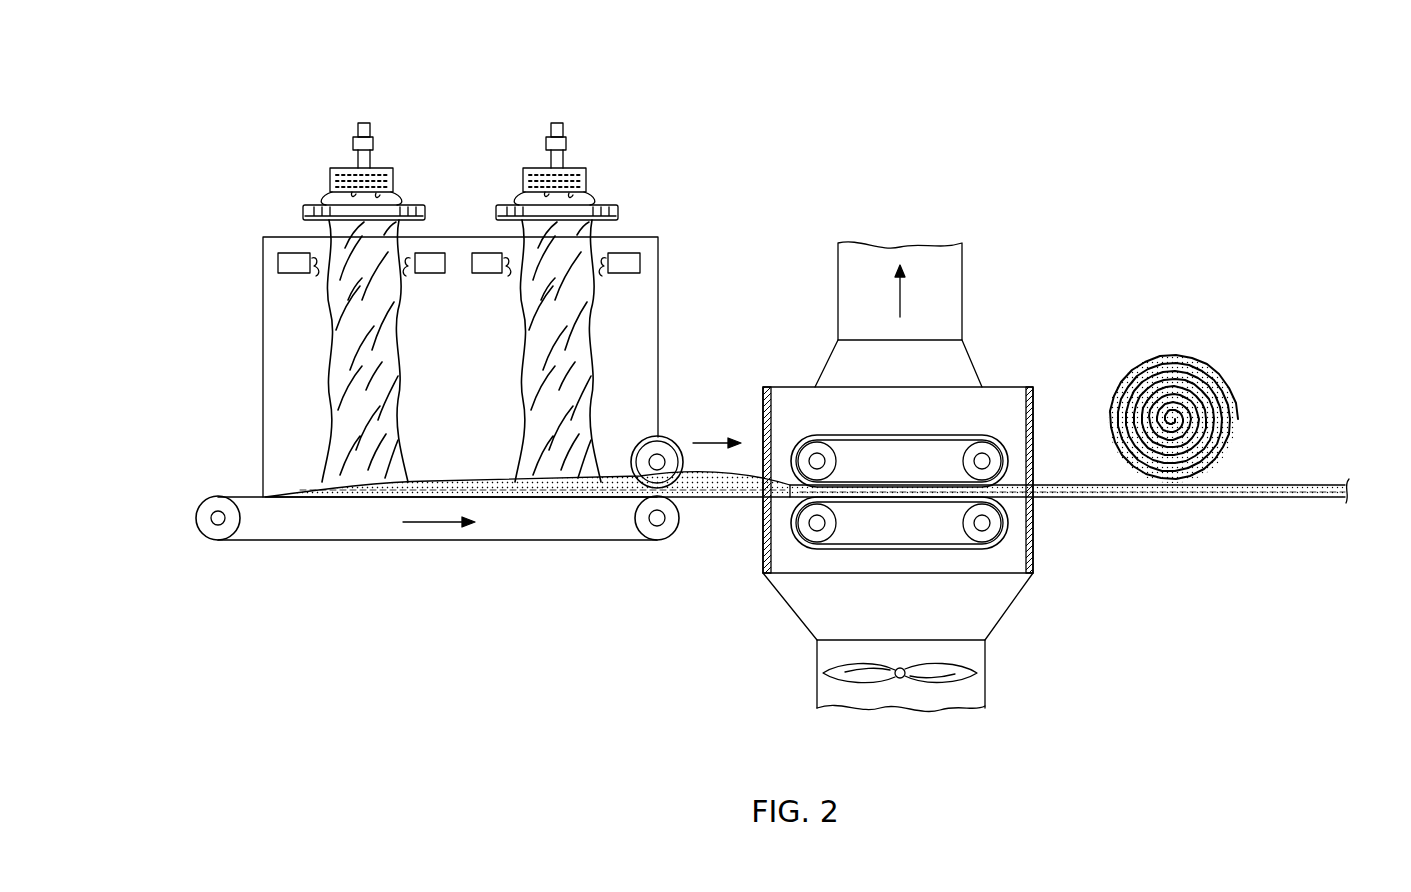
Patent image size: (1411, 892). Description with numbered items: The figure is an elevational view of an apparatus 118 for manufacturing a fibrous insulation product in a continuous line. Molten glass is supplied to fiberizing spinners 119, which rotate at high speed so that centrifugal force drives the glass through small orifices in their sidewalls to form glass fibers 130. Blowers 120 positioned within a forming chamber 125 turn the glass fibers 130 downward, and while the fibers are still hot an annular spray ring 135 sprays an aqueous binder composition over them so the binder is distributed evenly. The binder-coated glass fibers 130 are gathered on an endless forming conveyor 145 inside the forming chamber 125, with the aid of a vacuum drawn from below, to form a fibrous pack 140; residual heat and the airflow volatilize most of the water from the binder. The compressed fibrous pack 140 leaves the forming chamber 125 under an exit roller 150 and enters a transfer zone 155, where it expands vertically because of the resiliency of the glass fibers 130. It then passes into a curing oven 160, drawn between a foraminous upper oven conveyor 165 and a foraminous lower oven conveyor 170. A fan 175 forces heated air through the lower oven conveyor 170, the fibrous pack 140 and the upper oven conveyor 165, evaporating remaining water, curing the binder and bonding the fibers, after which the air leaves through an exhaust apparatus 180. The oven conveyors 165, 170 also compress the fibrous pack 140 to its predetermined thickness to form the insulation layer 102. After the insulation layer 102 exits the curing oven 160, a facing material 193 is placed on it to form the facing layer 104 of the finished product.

The apparatus 118 is at (190, 78).
The fiberizing spinner 119 is at (382, 168).
The blower 120 is at (278, 263).
The forming chamber 125 is at (280, 370).
The glass fibers 130 is at (328, 295).
The annular spray ring 135 is at (303, 212).
The fibrous pack 140 is at (470, 470).
The forming conveyor 145 is at (313, 543).
The exit roller 150 is at (668, 437).
The transfer zone 155 is at (715, 520).
The curing oven 160 is at (791, 387).
The upper oven conveyor 165 is at (977, 434).
The lower oven conveyor 170 is at (900, 552).
The fan 175 is at (870, 684).
The exhaust apparatus 180 is at (963, 290).
The facing material 193 is at (1185, 353).
The insulation layer 102 is at (1132, 508).
The facing layer 104 is at (1262, 484).